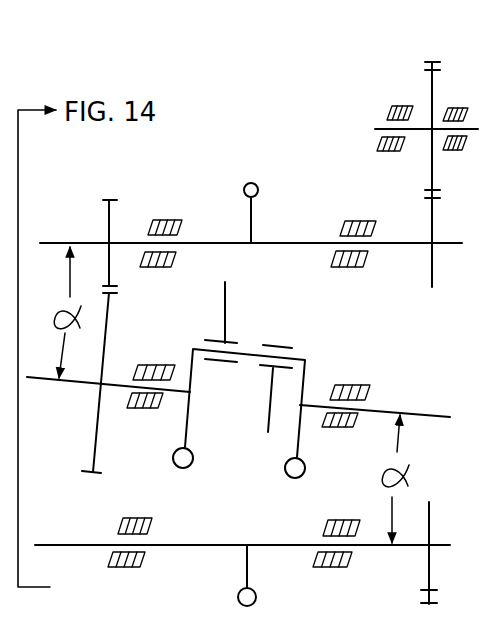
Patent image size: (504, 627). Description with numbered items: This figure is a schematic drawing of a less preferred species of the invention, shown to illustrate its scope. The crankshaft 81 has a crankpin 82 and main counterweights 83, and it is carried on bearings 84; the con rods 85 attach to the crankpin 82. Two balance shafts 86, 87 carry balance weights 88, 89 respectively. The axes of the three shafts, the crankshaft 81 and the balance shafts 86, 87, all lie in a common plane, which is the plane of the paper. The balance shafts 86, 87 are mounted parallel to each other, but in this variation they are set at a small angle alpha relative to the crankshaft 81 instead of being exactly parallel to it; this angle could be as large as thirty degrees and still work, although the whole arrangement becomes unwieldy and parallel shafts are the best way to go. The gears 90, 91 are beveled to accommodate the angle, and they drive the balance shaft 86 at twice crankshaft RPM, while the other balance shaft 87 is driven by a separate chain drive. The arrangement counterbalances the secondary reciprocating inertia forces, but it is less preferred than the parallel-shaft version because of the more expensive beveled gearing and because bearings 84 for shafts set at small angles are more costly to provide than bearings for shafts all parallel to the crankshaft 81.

The crankshaft 81 is at (86, 385).
The crankpin 82 is at (250, 348).
The main counterweights 83 is at (188, 468).
The bearings 84 is at (155, 363).
The con rods 85 is at (223, 308).
The balance shaft 86 is at (453, 245).
The balance shaft 87 is at (442, 543).
The balance weight 88 is at (258, 187).
The balance weight 89 is at (238, 597).
The gear 90 is at (112, 215).
The gear 91 is at (97, 440).